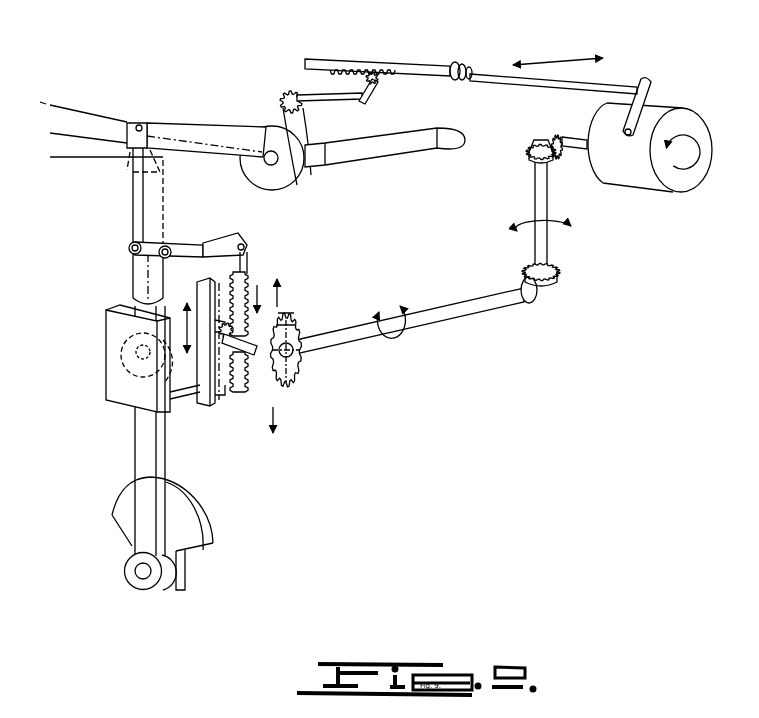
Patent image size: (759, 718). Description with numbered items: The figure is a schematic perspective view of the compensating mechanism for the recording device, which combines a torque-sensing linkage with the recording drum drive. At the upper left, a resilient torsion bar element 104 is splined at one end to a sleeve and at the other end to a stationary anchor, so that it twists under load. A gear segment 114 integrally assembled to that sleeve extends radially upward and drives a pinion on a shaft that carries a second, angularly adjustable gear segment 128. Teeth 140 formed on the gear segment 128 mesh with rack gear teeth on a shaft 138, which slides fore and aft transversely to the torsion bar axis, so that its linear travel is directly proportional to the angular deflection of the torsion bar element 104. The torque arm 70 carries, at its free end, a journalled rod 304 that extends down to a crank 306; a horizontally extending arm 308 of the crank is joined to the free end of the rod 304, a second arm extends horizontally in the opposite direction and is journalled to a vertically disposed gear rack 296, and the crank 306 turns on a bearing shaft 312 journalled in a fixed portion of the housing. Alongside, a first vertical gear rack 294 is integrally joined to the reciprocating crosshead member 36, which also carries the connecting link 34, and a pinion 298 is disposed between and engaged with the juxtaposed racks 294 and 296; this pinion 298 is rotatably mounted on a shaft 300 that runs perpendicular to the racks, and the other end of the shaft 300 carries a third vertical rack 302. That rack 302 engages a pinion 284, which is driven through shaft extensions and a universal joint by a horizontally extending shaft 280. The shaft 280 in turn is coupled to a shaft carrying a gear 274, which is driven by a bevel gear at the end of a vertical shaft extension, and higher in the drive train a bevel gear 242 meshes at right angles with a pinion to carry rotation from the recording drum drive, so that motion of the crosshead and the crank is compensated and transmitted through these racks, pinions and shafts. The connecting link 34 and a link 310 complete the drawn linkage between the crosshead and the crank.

The connecting link 34 is at (137, 468).
The reciprocating crosshead member 36 is at (106, 360).
The torque arm 70 is at (207, 126).
The torsion bar element 104 is at (372, 146).
The gear segment 114 is at (306, 126).
The gear segment 128 is at (372, 98).
The shaft 138 is at (412, 70).
The teeth 140 is at (378, 81).
The bevel gear 242 is at (527, 154).
The gear 274 is at (545, 296).
The horizontally extending shaft 280 is at (447, 320).
The pinion 284 is at (292, 334).
The gear rack 294 is at (215, 400).
The gear rack 296 is at (250, 277).
The pinion 298 is at (218, 395).
The shaft 300 is at (258, 383).
The third vertical rack 302 is at (282, 318).
The rod 304 is at (137, 160).
The crank 306 is at (183, 243).
The horizontally extending arm 308 is at (133, 258).
The link 310 is at (228, 243).
The bearing shaft 312 is at (198, 283).